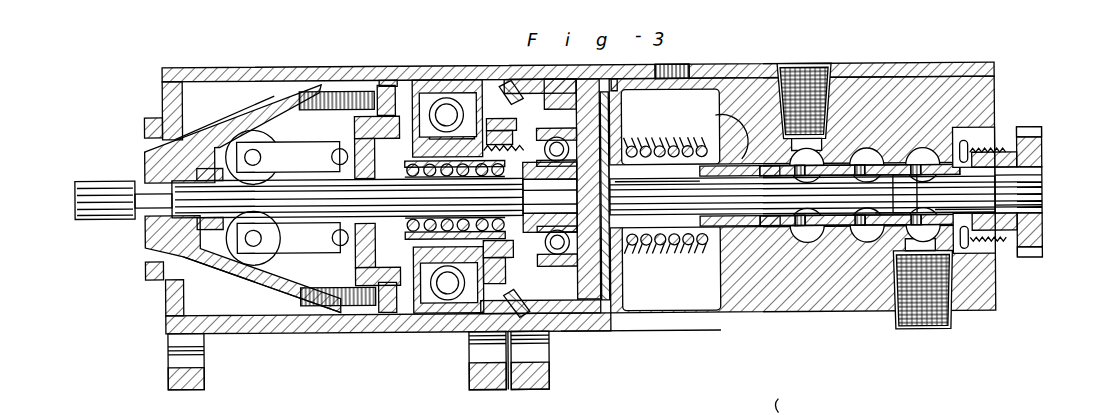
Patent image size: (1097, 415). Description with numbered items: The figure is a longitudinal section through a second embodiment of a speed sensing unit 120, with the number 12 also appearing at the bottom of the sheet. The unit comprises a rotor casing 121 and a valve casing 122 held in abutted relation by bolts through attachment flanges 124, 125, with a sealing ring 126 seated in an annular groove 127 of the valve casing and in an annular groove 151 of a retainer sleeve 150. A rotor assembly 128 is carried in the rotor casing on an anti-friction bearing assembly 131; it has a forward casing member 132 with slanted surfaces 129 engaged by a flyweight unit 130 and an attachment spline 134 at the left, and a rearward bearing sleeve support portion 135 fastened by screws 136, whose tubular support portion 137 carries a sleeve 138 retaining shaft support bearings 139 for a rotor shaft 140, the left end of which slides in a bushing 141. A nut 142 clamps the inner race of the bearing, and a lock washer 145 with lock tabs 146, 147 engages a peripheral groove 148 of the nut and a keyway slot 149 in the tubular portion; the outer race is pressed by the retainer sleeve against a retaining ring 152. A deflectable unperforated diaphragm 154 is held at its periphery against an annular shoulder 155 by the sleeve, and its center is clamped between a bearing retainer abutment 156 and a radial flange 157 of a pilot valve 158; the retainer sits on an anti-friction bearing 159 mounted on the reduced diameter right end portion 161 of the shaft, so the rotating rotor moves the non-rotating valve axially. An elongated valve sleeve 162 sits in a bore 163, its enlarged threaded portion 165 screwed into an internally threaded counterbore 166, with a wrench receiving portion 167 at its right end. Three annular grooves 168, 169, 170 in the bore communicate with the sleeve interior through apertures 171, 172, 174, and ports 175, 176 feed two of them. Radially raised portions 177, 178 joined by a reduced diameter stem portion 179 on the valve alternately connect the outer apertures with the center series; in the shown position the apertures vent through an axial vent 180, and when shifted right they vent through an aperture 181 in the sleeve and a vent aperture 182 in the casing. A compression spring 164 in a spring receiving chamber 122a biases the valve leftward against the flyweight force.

The transmission 12 is at (789, 404).
The sensing unit assembly 120 is at (612, 342).
The rotor casing 121 is at (330, 326).
The valve casing 122 is at (872, 330).
The spring receiving chamber 122a is at (718, 130).
The attachment flange 124 is at (470, 376).
The attachment flange 125 is at (548, 372).
The sealing ring 126 is at (512, 84).
The annular groove 127 is at (530, 314).
The rotor assembly 128 is at (305, 313).
The slanted surfaces 129 is at (268, 284).
The flyweight unit 130 is at (314, 137).
The anti-friction bearing assembly 131 is at (450, 300).
The forward casing member 132 is at (248, 130).
The attachment spline 134 is at (98, 194).
The rearward bearing sleeve support portion 135 is at (385, 128).
The screws 136 is at (380, 96).
The tubular support portion 137 is at (428, 122).
The sleeve 138 is at (312, 234).
The shaft support bearings 139 is at (407, 228).
The rotor shaft 140 is at (347, 197).
The bushing 141 is at (214, 180).
The nut 142 is at (500, 258).
The lock washer 145 is at (487, 361).
The lock tab 146 is at (502, 136).
The lock tab 147 is at (496, 158).
The peripheral groove 148 is at (502, 122).
The keyway slot 149 is at (466, 130).
The retainer sleeve 150 is at (548, 96).
The annular groove 151 is at (500, 288).
The retaining ring 152 is at (392, 82).
The diaphragm 154 is at (616, 98).
The annular shoulder 155 is at (617, 88).
The bearing retainer abutment 156 is at (604, 118).
The radial flange 157 is at (652, 148).
The pilot valve 158 is at (655, 236).
The anti-friction bearing 159 is at (558, 136).
The reduced diameter right end portion 161 is at (524, 200).
The valve sleeve 162 is at (968, 165).
The bore 163 is at (896, 160).
The compression spring 164 is at (712, 158).
The enlarged threaded portion 165 is at (984, 196).
The internally threaded counterbore 166 is at (978, 156).
The wrench receiving portion 167 is at (1028, 132).
The annular groove 168 is at (812, 172).
The annular groove 169 is at (865, 152).
The annular groove 170 is at (924, 152).
The apertures 171 is at (794, 215).
The apertures 172 is at (866, 244).
The apertures 174 is at (926, 244).
The port 175 is at (818, 88).
The port 176 is at (936, 308).
The radially raised portion 177 is at (732, 198).
The radially raised portion 178 is at (923, 210).
The reduced diameter stem portion 179 is at (884, 200).
The axial vent 180 is at (1040, 199).
The aperture 181 is at (726, 238).
The vent aperture 182 is at (686, 72).